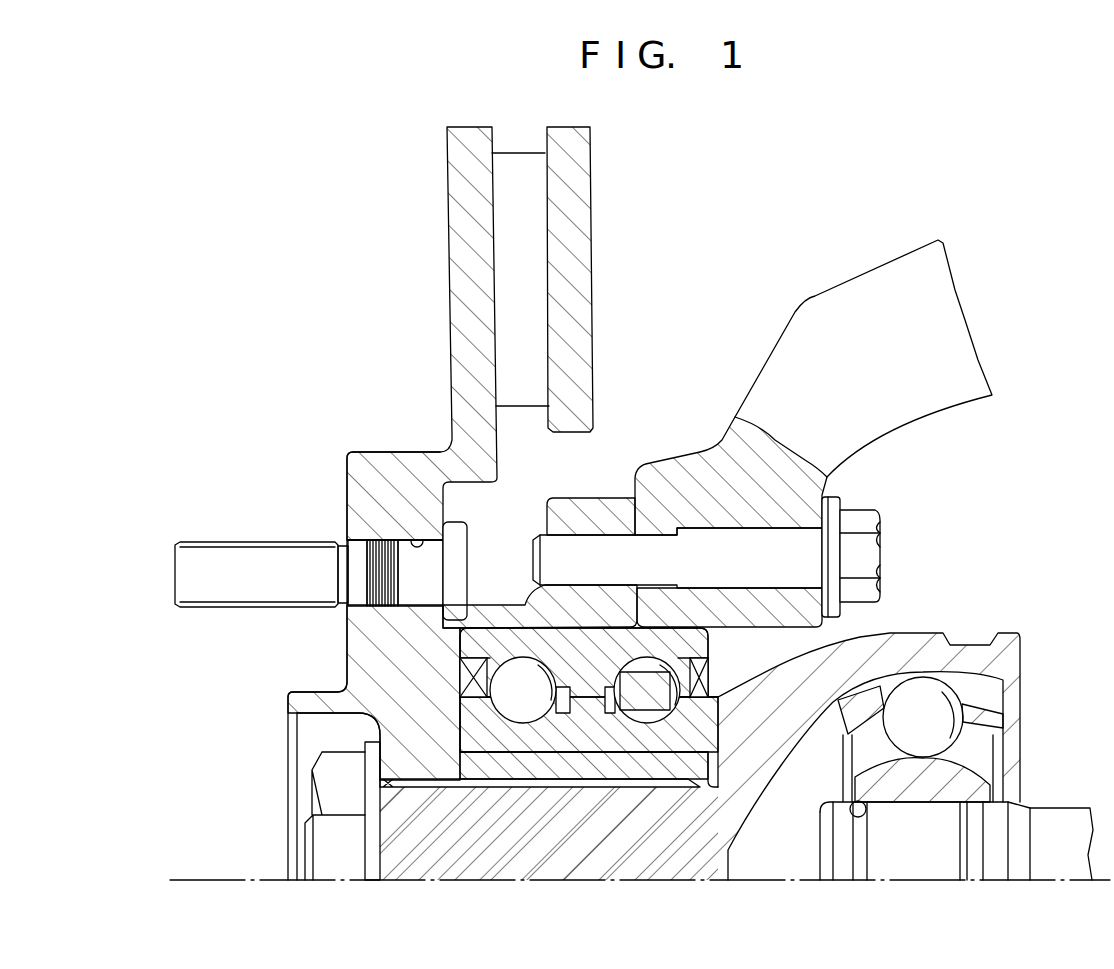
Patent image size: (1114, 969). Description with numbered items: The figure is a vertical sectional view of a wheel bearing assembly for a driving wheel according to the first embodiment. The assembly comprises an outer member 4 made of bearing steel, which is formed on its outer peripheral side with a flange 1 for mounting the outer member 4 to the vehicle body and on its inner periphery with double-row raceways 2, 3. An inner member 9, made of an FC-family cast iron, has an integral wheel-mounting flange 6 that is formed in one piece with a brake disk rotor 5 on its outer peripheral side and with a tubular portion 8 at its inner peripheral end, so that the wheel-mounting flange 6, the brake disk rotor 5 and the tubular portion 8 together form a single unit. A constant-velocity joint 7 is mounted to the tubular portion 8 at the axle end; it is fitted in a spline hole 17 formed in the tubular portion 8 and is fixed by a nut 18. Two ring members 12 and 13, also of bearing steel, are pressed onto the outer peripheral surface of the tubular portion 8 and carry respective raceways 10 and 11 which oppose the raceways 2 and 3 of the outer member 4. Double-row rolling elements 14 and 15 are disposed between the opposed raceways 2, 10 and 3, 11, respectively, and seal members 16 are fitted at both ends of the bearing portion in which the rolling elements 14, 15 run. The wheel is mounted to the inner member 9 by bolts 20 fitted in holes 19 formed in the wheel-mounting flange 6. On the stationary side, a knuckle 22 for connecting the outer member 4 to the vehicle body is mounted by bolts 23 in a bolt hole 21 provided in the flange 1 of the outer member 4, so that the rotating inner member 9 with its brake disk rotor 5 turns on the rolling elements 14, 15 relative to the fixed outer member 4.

The flange 1 is at (554, 511).
The raceway 2 is at (520, 658).
The raceway 3 is at (700, 648).
The outer member 4 is at (622, 490).
The brake disk rotor 5 is at (578, 240).
The wheel-mounting flange 6 is at (355, 485).
The constant-velocity joint 7 is at (947, 624).
The tubular portion 8 is at (587, 770).
The inner member 9 is at (342, 672).
The raceway 10 is at (520, 740).
The raceway 11 is at (630, 745).
The ring member 12 is at (470, 745).
The ring member 13 is at (712, 745).
The rolling elements 14 is at (500, 745).
The rolling elements 15 is at (655, 712).
The seal members 16 is at (470, 665).
The spline hole 17 is at (655, 775).
The nut 18 is at (340, 868).
The holes 19 is at (417, 540).
The bolts 20 is at (195, 577).
The bolt hole 21 is at (589, 540).
The knuckle 22 is at (833, 305).
The bolts 23 is at (872, 552).